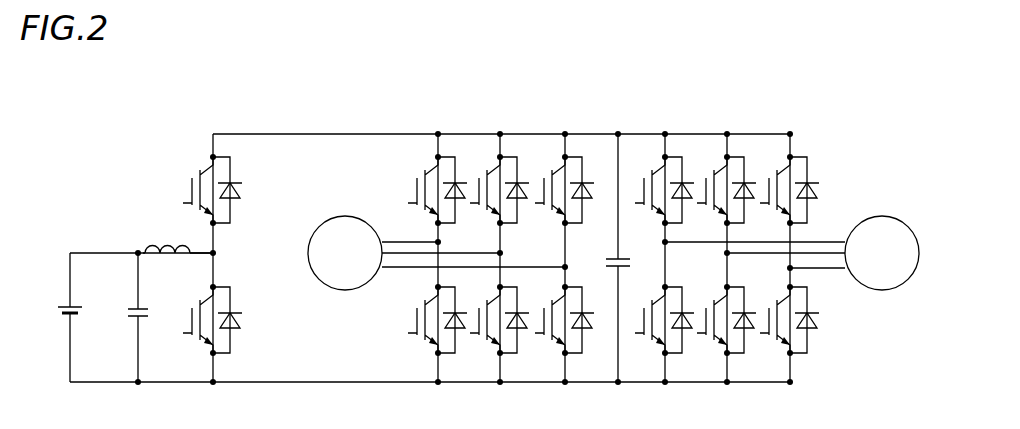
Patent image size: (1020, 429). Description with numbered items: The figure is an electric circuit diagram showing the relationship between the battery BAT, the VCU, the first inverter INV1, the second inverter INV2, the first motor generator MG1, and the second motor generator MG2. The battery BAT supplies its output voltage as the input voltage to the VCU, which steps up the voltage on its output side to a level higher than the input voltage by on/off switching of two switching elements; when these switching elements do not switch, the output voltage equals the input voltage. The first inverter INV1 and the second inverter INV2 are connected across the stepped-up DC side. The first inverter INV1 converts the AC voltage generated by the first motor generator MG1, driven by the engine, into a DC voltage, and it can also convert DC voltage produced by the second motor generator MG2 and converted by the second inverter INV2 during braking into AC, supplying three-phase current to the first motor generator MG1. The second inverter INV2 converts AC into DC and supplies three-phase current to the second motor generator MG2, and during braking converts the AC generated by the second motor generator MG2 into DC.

The battery BAT is at (61, 320).
The element VCU is at (125, 122).
The second inverter INV2 is at (400, 123).
The first inverter INV1 is at (635, 123).
The second motor generator MG2 is at (438, 253).
The first motor generator MG1 is at (790, 253).